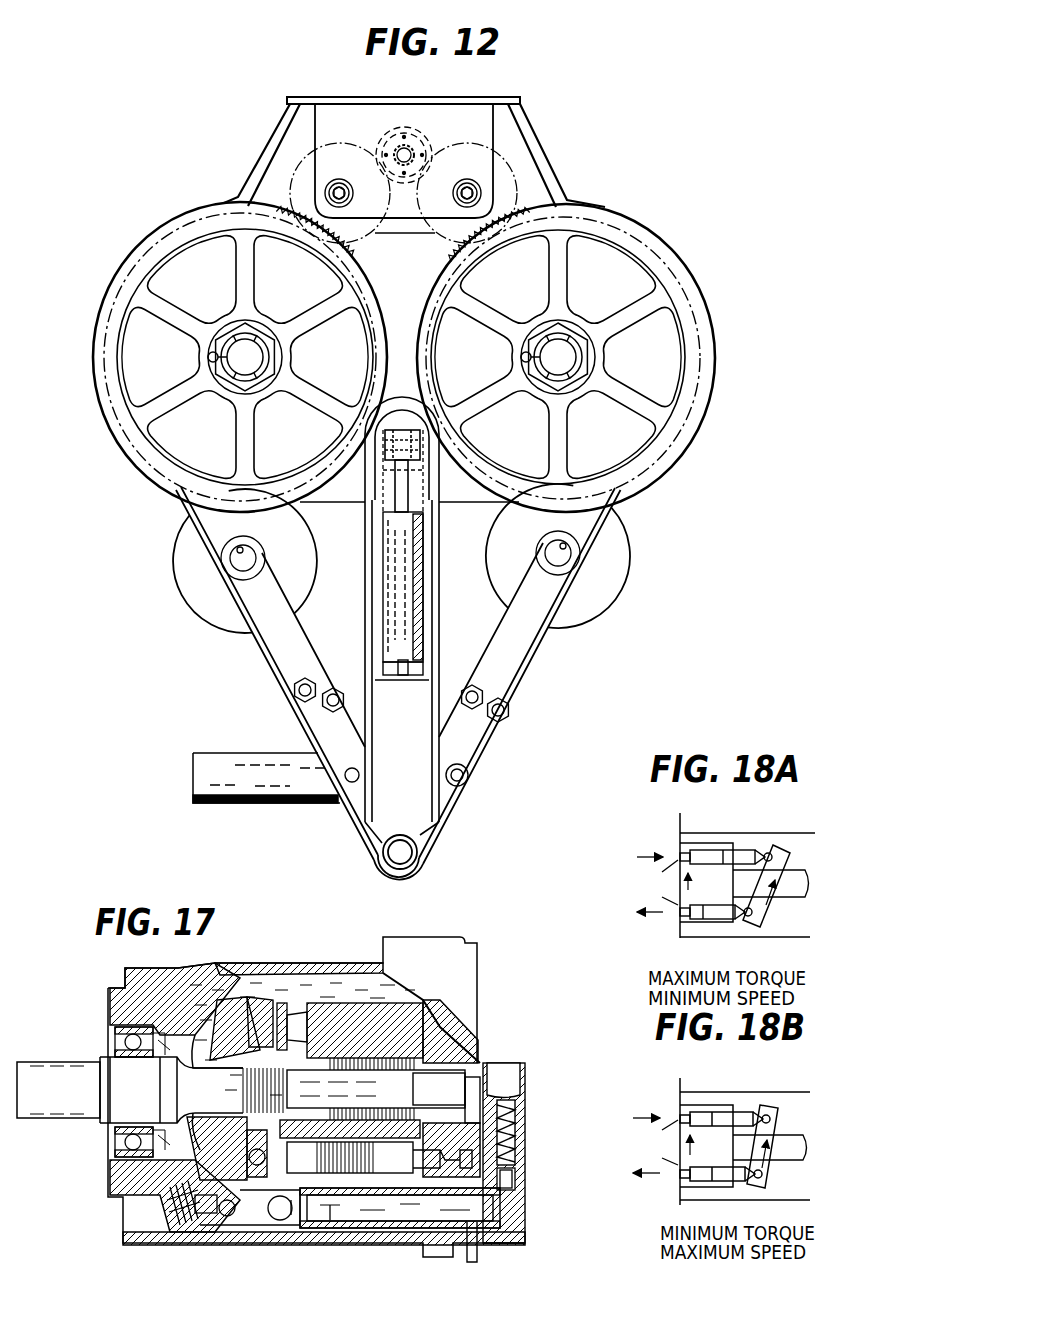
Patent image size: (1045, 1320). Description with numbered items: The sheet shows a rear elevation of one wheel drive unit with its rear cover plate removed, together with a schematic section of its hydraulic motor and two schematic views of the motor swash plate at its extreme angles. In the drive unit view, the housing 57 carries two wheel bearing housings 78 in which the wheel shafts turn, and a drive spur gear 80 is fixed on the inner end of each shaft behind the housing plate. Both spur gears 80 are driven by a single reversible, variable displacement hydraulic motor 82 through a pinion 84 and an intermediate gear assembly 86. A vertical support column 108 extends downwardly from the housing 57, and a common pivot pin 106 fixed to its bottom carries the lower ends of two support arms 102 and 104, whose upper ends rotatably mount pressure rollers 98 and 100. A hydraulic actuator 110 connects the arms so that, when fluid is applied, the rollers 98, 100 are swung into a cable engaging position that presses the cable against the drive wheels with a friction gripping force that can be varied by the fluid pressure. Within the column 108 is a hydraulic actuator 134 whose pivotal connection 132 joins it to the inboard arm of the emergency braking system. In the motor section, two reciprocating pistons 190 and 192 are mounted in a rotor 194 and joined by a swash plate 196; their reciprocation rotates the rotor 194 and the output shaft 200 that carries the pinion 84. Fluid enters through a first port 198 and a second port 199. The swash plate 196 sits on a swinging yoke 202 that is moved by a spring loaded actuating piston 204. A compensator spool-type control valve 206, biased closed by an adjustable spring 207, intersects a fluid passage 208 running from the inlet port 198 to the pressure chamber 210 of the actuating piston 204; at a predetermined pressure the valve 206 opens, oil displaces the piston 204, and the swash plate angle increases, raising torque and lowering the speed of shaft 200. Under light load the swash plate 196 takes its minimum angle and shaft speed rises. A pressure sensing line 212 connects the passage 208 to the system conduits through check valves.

In FIG. 12, the housing 57 is at (258, 172).
In FIG. 12, the pinion 84 is at (410, 148).
In FIG. 12, the intermediate gear assembly 86 is at (410, 238).
In FIG. 12, the drive spur gear 80 is at (170, 247).
In FIG. 12, the wheel bearing housing 78 is at (255, 348).
In FIG. 12, the vertical support column 108 is at (383, 707).
In FIG. 12, the pivotal connection 132 is at (420, 445).
In FIG. 12, the hydraulic actuator 134 is at (410, 622).
In FIG. 12, the pressure roller 100 is at (177, 565).
In FIG. 12, the pressure roller 98 is at (622, 568).
In FIG. 12, the support arm 104 is at (286, 672).
In FIG. 12, the support arm 102 is at (513, 675).
In FIG. 12, the pivot pin 106 is at (414, 852).
In FIG. 12, the hydraulic actuator 110 is at (200, 757).
In FIG. 17, the hydraulic motor 82 is at (243, 950).
In FIG. 17, the output shaft 200 is at (70, 1062).
In FIG. 18A, the output shaft 200 is at (793, 892).
In FIG. 18B, the output shaft 200 is at (792, 1158).
In FIG. 17, the swinging yoke 202 is at (213, 1148).
In FIG. 17, the swash plate 196 is at (273, 1005).
In FIG. 18A, the swash plate 196 is at (790, 853).
In FIG. 18B, the swash plate 196 is at (778, 1111).
In FIG. 17, the reciprocating piston 192 is at (305, 1007).
In FIG. 18A, the reciprocating piston 192 is at (715, 913).
In FIG. 17, the rotor 194 is at (383, 1013).
In FIG. 18A, the rotor 194 is at (728, 893).
In FIG. 17, the reciprocating piston 190 is at (297, 1147).
In FIG. 18A, the reciprocating piston 190 is at (740, 853).
In FIG. 17, the adjustable spring 207 is at (520, 1118).
In FIG. 17, the first port 198 is at (515, 1180).
In FIG. 18A, the first port 198 is at (678, 853).
In FIG. 18B, the first port 198 is at (678, 1113).
In FIG. 17, the compensator spool-type control valve 206 is at (495, 1212).
In FIG. 17, the actuating piston 204 is at (293, 1218).
In FIG. 17, the pressure chamber 210 is at (330, 1200).
In FIG. 17, the fluid passage 208 is at (492, 1241).
In FIG. 17, the pressure sensing line 212 is at (478, 1263).
In FIG. 18A, the second port 199 is at (678, 915).
In FIG. 18B, the second port 199 is at (678, 1177).